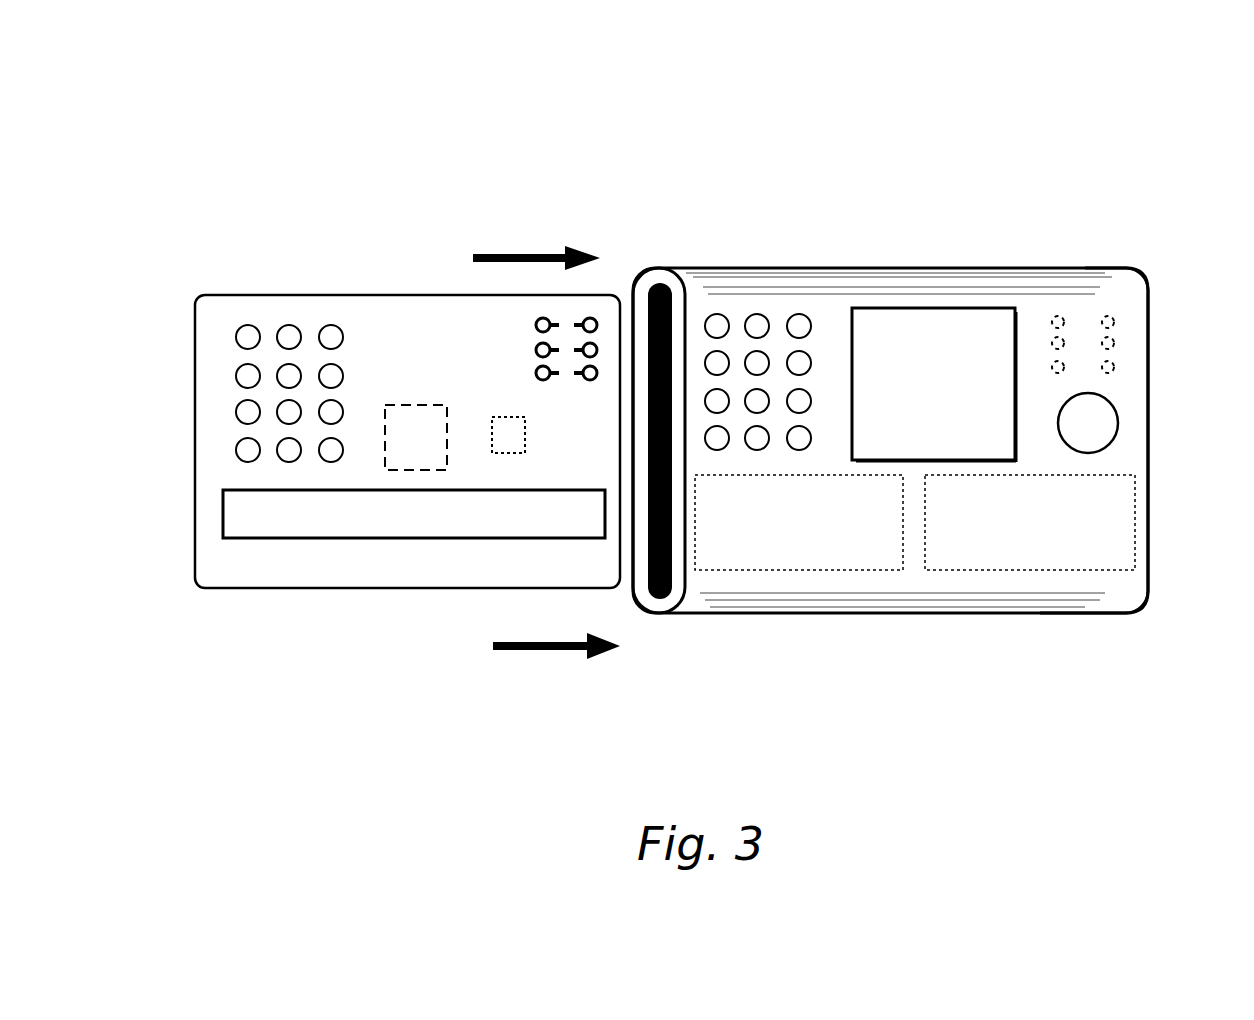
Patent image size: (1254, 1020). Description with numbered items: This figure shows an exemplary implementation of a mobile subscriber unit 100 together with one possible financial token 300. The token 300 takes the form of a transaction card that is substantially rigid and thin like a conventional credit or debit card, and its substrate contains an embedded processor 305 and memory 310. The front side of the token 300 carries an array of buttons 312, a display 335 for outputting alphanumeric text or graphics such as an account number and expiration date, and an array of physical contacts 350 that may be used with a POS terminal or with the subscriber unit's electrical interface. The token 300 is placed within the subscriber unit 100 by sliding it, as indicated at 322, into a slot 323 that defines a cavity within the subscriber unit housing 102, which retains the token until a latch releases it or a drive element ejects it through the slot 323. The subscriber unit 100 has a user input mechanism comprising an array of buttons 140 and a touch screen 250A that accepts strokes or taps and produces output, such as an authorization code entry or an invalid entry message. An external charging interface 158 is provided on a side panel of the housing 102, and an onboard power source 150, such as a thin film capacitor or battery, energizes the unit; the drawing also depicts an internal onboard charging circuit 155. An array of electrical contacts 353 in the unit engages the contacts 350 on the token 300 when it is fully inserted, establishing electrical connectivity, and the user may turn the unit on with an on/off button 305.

The subscriber unit 100 is at (955, 162).
The subscriber unit housing 102 is at (1085, 268).
The array of buttons 140 is at (734, 306).
The onboard power source 150 is at (811, 570).
The internal onboard charging circuit 155 is at (1042, 572).
The external charging interface 158 is at (1172, 464).
The touch screen 250A is at (880, 308).
The financial token 300 is at (210, 295).
The embedded processor 305 is at (425, 405).
The memory 310 is at (510, 453).
The array of buttons 312 is at (222, 316).
The sliding insertion 322 is at (530, 246).
The slot 323 is at (658, 284).
The display 335 is at (445, 538).
The array of physical contacts 350 is at (537, 343).
The array of electrical contacts 353 is at (1120, 338).